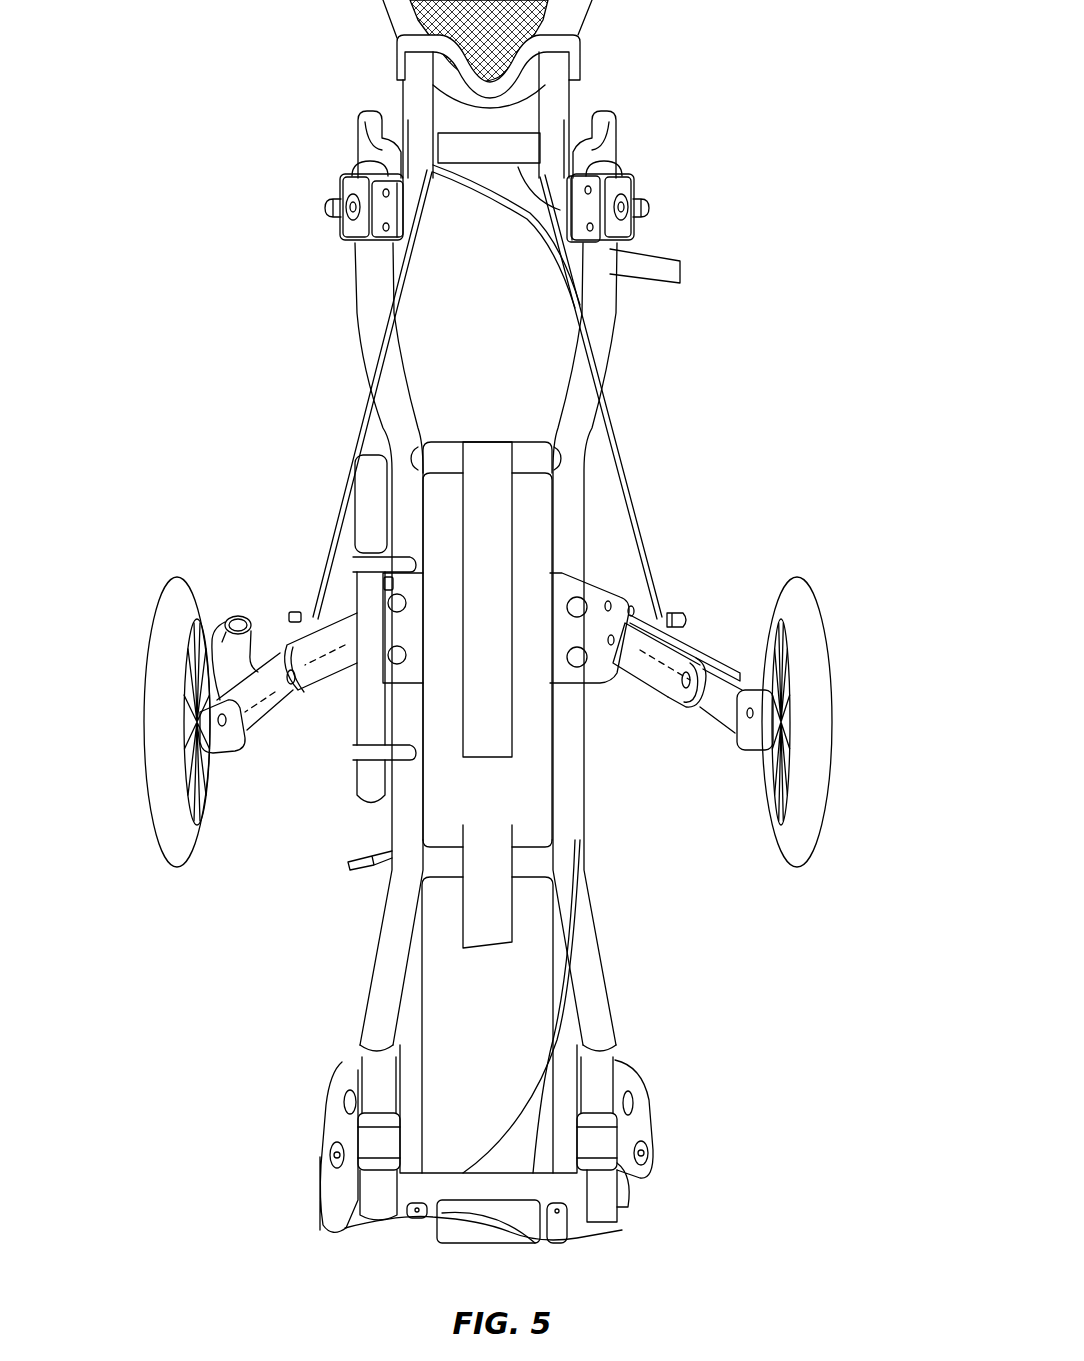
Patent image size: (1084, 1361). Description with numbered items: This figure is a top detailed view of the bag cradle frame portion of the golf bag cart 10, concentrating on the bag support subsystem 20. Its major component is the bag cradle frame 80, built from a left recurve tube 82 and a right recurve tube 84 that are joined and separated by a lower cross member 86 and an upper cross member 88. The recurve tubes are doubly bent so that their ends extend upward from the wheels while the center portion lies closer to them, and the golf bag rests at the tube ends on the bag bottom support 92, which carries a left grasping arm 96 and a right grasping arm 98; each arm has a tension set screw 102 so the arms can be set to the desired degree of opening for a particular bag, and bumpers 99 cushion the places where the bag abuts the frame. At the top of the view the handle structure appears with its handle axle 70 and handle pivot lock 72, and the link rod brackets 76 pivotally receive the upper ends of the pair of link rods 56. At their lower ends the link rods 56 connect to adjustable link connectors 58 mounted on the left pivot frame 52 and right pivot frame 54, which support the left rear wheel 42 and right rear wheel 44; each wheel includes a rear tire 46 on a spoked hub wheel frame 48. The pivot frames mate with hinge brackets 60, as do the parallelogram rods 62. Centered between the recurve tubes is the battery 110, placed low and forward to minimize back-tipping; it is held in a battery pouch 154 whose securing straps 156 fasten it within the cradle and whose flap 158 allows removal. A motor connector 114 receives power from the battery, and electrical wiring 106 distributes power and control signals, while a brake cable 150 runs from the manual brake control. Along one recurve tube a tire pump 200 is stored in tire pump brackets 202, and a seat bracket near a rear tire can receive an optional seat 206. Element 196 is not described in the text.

The golf bag cart 10 is at (662, 94).
The bag support subsystem 20 is at (672, 878).
The left rear wheel 42 is at (175, 580).
The right rear wheel 44 is at (803, 709).
The rear tire 46 is at (822, 690).
The spoked hub wheel frame 48 is at (780, 770).
The left pivot frame 52 is at (292, 640).
The right pivot frame 54 is at (718, 682).
The link rods 56 is at (633, 505).
The adjustable link connectors 58 is at (672, 712).
The hinge brackets 60 is at (598, 592).
The parallelogram rods 62 is at (690, 630).
The handle axle 70 is at (487, 165).
The handle pivot lock 72 is at (545, 135).
The link rod brackets 76 is at (560, 88).
The bag cradle frame 80 is at (642, 973).
The left recurve tube 82 is at (366, 300).
The right recurve tube 84 is at (600, 352).
The lower cross member 86 is at (450, 882).
The upper cross member 88 is at (432, 444).
The bag bottom support 92 is at (668, 1090).
The left grasping arm 96 is at (345, 195).
The right grasping arm 98 is at (602, 162).
The bumpers 99 is at (397, 230).
The tension set screw 102 is at (650, 210).
The electrical wiring 106 is at (530, 222).
The battery 110 is at (456, 492).
The motor connector 114 is at (358, 858).
The brake cable 150 is at (545, 1122).
The battery pouch 154 is at (498, 738).
The securing straps 156 is at (480, 450).
The flap 158 is at (538, 492).
The support bar 196 is at (680, 272).
The tire pump 200 is at (362, 482).
The tire pump brackets 202 is at (405, 762).
The seat 206 is at (248, 625).